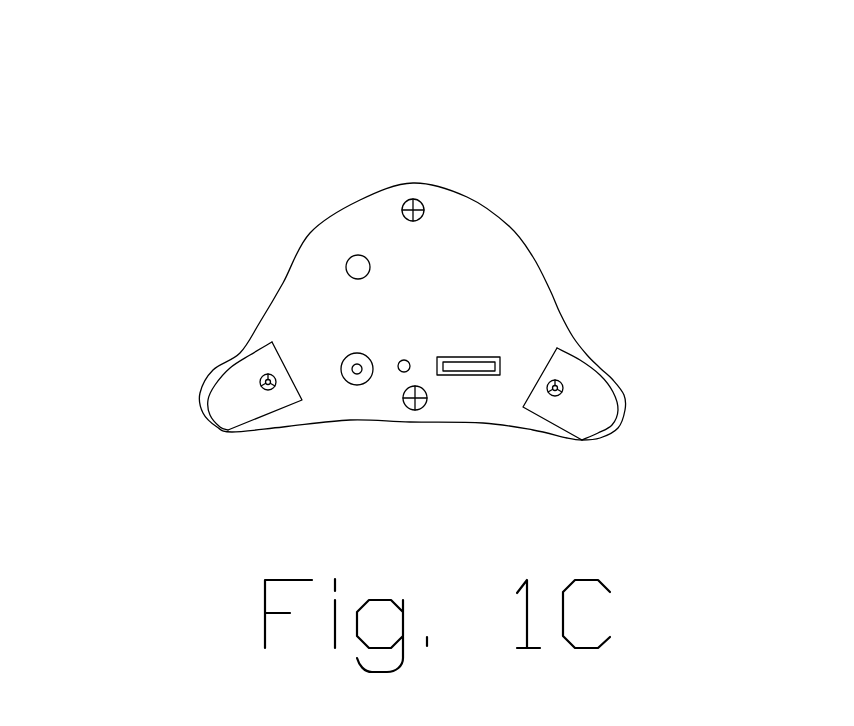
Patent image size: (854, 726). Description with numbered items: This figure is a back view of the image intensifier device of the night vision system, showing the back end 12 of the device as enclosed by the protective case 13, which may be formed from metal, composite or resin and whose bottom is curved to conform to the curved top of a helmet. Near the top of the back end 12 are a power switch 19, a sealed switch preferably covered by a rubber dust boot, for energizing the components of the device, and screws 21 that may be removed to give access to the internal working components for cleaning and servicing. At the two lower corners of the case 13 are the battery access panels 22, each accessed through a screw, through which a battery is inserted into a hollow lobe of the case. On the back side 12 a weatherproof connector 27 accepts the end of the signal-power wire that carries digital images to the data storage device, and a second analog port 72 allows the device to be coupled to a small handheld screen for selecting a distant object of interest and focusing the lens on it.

The back end 12 is at (435, 323).
The protective case 13 is at (323, 260).
The power switch 19 is at (352, 270).
The screws 21 is at (410, 200).
The battery access panel 22 is at (223, 407).
The weatherproof connector 27 is at (500, 363).
The second analog port 72 is at (353, 380).